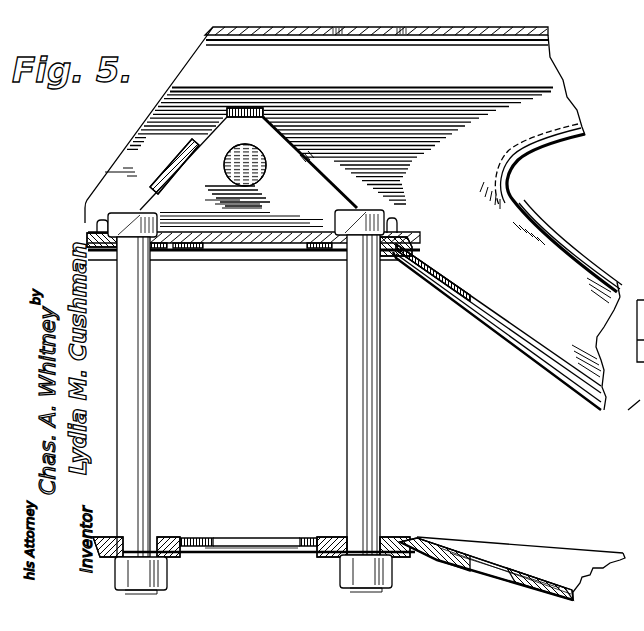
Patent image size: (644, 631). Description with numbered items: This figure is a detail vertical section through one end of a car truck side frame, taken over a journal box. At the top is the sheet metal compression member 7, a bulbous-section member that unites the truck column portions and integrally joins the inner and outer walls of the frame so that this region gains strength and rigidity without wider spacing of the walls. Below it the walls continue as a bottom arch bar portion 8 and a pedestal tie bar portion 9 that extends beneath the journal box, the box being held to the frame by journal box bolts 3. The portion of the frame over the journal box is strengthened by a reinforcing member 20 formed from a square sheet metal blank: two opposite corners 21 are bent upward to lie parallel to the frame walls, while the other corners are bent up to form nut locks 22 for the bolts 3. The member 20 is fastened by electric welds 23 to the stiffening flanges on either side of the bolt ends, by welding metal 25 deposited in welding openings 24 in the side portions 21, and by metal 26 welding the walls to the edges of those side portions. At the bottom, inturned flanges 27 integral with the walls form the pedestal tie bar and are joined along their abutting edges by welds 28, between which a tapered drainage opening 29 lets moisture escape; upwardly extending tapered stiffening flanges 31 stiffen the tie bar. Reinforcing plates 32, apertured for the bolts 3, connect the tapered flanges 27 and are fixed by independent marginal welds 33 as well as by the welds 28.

The journal box bolt 3 is at (140, 383).
The compression member 7 is at (552, 35).
The bottom arch bar portion 8 is at (543, 260).
The pedestal tie bar portion 9 is at (598, 582).
The reinforcing member 20 is at (283, 252).
The upwardly bent corner (side portion) 21 is at (118, 188).
The nut lock 22 is at (97, 228).
The electric weld 23 is at (88, 241).
The welding opening 24 is at (263, 178).
The welding metal 25 is at (228, 166).
The welding metal 26 is at (163, 165).
The inturned flange 27 is at (458, 560).
The weld 28 is at (170, 540).
The drainage opening 29 is at (473, 558).
The tapered stiffening flange 31 is at (533, 532).
The reinforcing plate 32 is at (178, 555).
The independent weld 33 is at (335, 553).